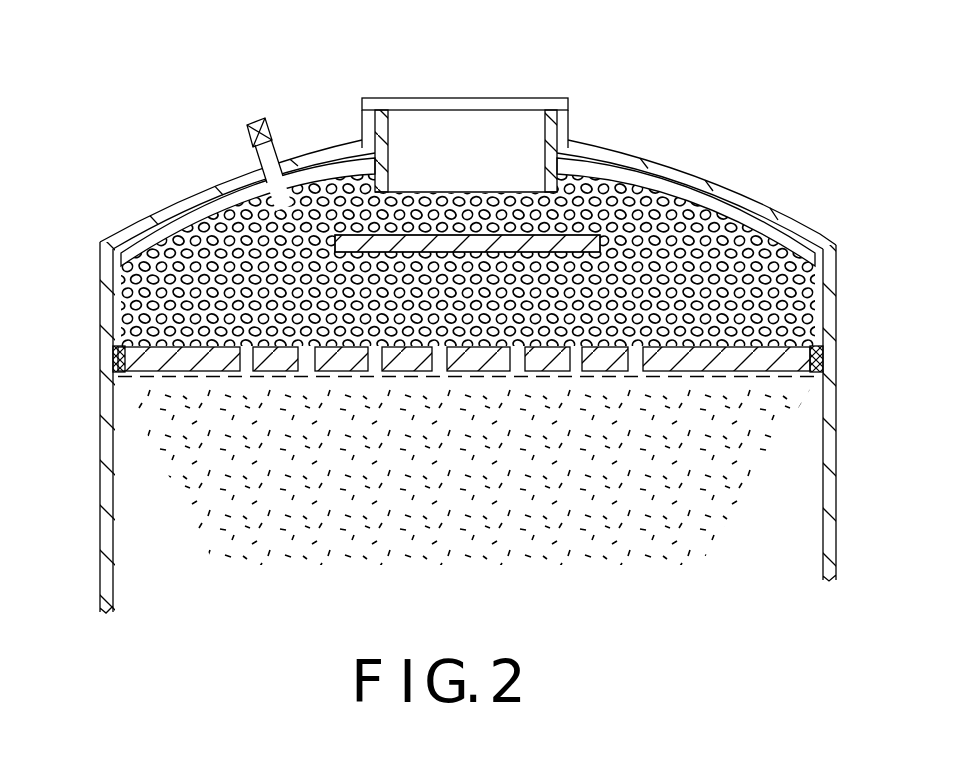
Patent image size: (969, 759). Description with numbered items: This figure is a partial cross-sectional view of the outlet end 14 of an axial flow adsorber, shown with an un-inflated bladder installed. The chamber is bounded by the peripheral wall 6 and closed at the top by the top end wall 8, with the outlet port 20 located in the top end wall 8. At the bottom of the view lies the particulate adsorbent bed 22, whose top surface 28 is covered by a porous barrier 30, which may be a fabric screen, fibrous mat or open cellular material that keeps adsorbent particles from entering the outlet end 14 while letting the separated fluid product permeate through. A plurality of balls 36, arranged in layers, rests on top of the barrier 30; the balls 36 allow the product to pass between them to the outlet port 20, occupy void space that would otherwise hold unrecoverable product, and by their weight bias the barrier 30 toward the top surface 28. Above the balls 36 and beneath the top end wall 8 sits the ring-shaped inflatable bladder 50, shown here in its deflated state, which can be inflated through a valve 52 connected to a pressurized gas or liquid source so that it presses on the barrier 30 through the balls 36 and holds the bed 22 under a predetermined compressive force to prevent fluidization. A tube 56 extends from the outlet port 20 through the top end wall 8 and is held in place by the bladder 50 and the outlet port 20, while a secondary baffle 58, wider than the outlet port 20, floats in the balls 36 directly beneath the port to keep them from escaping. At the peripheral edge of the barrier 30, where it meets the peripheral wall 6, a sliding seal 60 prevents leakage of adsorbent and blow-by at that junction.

The peripheral wall 6 is at (838, 437).
The top end wall 8 is at (733, 197).
The outlet end 14 is at (777, 258).
The outlet port 20 is at (498, 130).
The particulate adsorbent bed 22 is at (133, 488).
The top surface 28 is at (180, 378).
The porous barrier 30 is at (788, 377).
The balls 36 is at (815, 293).
The inflatable bladder 50 is at (157, 243).
The valve 52 is at (273, 122).
The tube 56 is at (385, 134).
The secondary baffle 58 is at (590, 243).
The sliding seal 60 is at (116, 358).